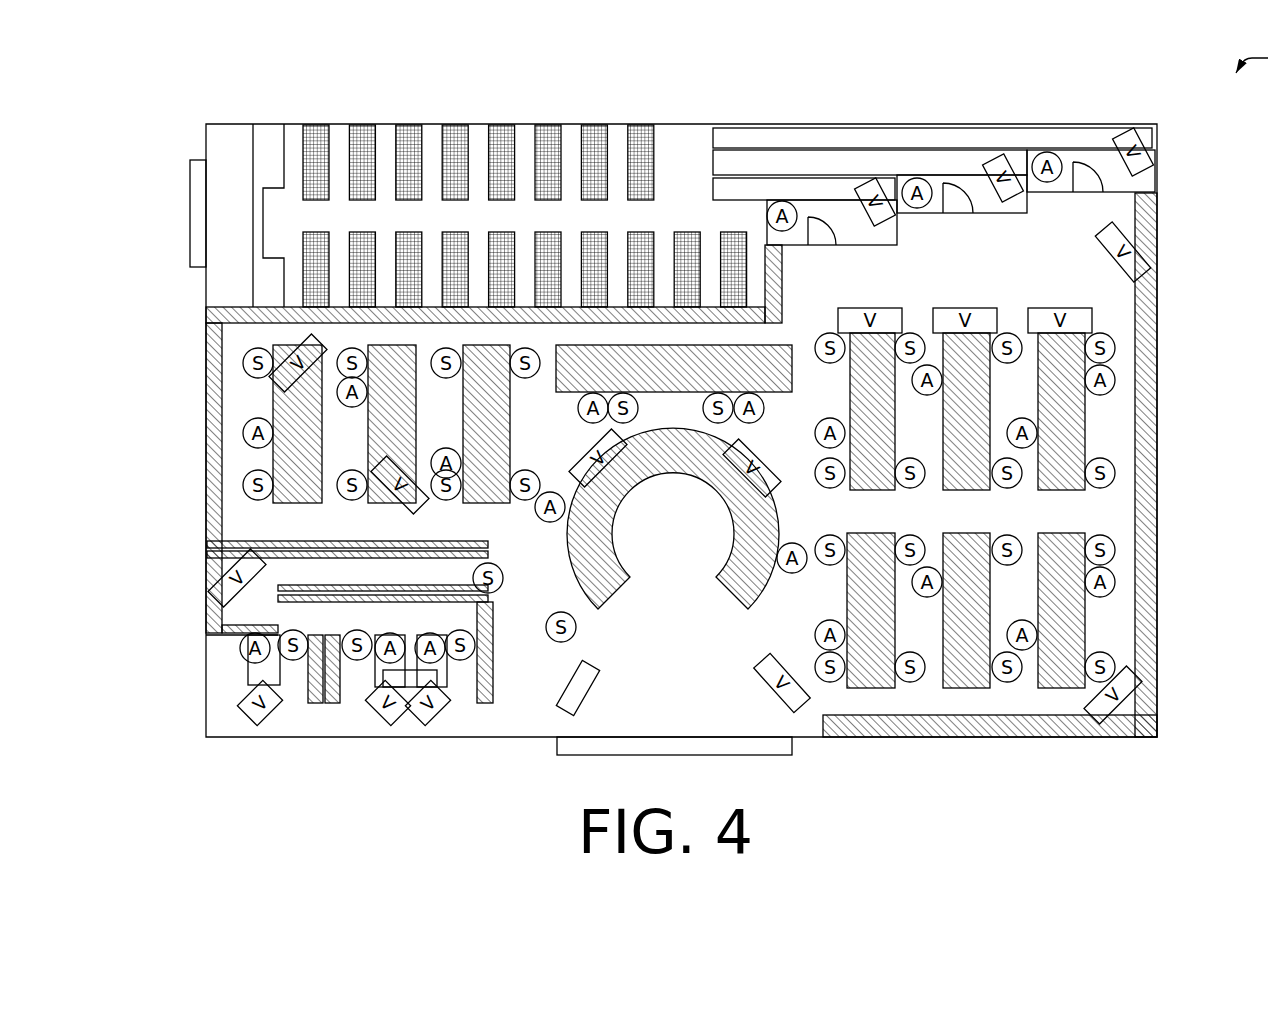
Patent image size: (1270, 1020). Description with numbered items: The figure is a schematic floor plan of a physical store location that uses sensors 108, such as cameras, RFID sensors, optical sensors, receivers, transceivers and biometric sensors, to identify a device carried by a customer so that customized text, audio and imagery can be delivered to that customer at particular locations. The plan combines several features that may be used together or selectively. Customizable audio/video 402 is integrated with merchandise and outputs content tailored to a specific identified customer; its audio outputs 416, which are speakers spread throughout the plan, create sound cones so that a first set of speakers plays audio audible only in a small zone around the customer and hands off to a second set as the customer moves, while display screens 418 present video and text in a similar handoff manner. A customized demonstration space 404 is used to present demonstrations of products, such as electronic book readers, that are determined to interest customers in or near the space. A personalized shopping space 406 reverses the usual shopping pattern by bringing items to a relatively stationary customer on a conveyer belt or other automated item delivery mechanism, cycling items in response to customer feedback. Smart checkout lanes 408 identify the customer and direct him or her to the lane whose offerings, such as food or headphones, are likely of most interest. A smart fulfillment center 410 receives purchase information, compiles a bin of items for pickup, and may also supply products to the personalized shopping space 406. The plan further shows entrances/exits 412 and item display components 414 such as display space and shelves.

The sensors 108 is at (1102, 680).
The customizable audio/video (A/V) 402 is at (1118, 650).
The customized demonstration space 404 is at (653, 560).
The personalized shopping space 406 is at (853, 223).
The smart checkout lanes 408 is at (265, 600).
The smart fulfillment center 410 is at (283, 215).
The entrances/exits 412 is at (190, 213).
The item display components 414 is at (943, 690).
The audio outputs 416 is at (1113, 587).
The display screens 418 is at (738, 193).